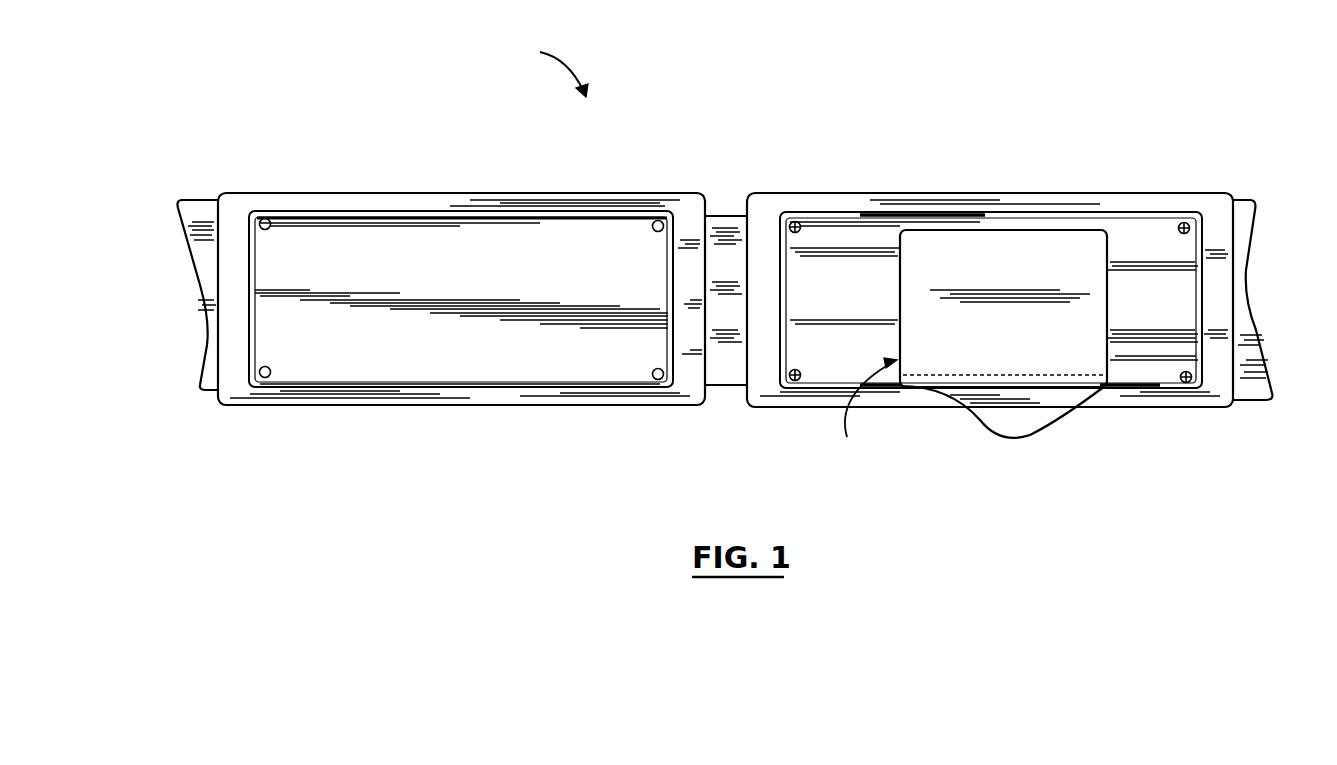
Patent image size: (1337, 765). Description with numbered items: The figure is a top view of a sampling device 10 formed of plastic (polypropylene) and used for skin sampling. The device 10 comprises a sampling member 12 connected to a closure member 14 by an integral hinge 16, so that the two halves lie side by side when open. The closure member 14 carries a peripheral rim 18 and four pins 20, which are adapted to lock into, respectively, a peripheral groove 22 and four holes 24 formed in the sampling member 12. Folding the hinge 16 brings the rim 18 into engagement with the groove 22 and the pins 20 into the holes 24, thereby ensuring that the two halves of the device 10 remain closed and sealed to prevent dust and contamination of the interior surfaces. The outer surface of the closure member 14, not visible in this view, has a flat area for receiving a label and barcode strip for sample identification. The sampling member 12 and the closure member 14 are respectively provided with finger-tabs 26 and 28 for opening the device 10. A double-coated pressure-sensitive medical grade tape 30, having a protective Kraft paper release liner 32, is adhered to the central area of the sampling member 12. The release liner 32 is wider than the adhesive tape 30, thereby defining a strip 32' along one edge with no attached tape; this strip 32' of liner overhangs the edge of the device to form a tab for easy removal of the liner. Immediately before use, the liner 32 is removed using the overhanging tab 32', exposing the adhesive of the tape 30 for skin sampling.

The sampling device 10 is at (547, 69).
The sampling member 12 is at (991, 200).
The closure member 14 is at (458, 198).
The integral hinge 16 is at (726, 226).
The peripheral rim 18 is at (456, 388).
The pins 20 is at (268, 218).
The peripheral groove 22 is at (886, 210).
The holes 24 is at (795, 222).
The finger-tab 26 is at (1248, 345).
The finger-tab 28 is at (200, 277).
The double-coated pressure-sensitive medical grade tape 30 is at (866, 412).
The release liner 32 is at (1006, 272).
The strip 32' is at (1002, 437).